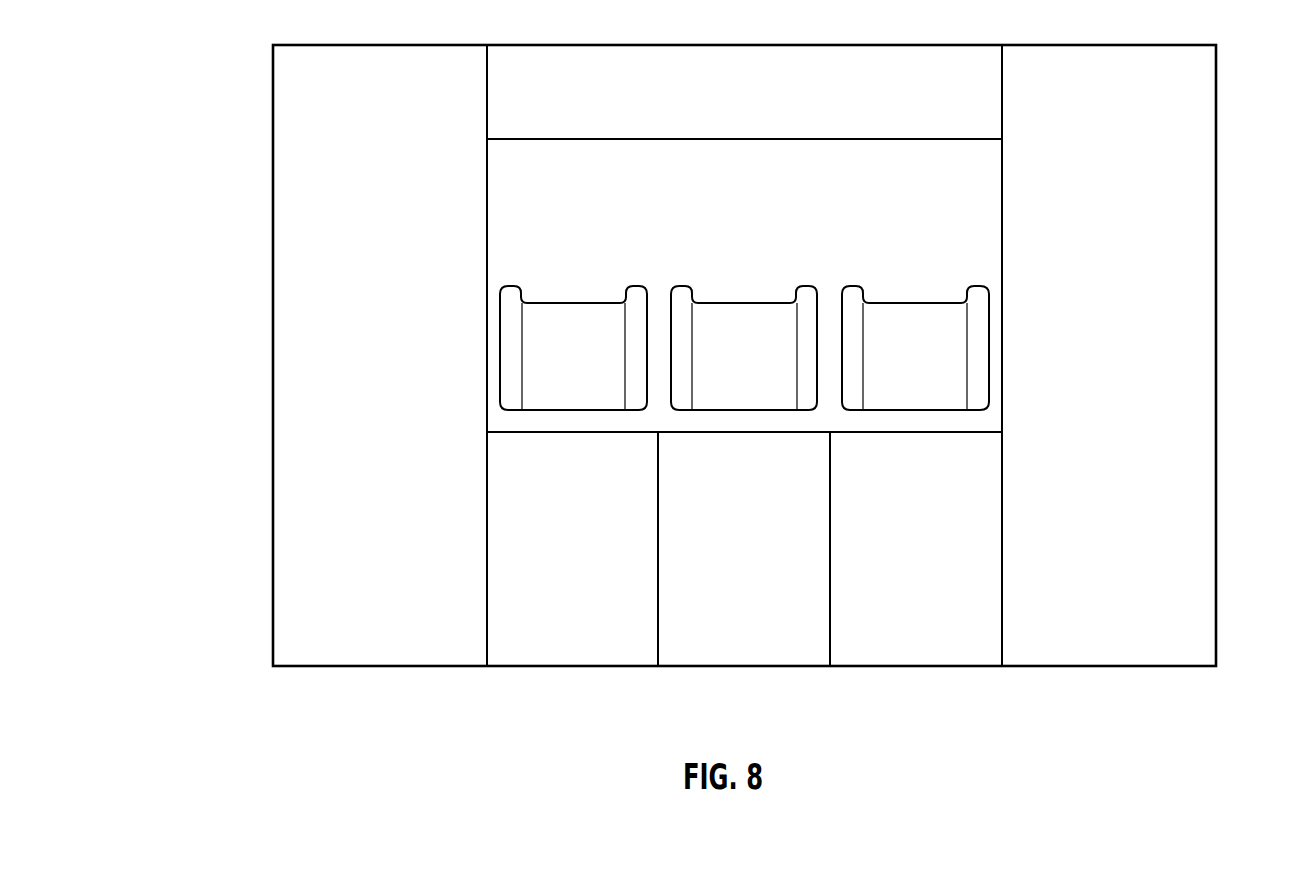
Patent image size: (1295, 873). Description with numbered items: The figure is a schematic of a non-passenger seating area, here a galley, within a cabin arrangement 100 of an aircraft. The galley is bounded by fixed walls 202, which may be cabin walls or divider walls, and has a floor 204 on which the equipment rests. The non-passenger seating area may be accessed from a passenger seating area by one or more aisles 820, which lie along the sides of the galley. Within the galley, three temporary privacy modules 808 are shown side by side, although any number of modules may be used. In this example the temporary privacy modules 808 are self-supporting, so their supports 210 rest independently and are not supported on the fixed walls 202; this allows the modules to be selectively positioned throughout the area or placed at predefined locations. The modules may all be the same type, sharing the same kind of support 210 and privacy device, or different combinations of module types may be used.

The cabin arrangement 100 is at (823, 170).
The fixed wall 202 is at (900, 150).
The floor 204 is at (747, 193).
The support 210 is at (578, 397).
The temporary privacy module 808 is at (560, 327).
The aisle 820 is at (292, 215).